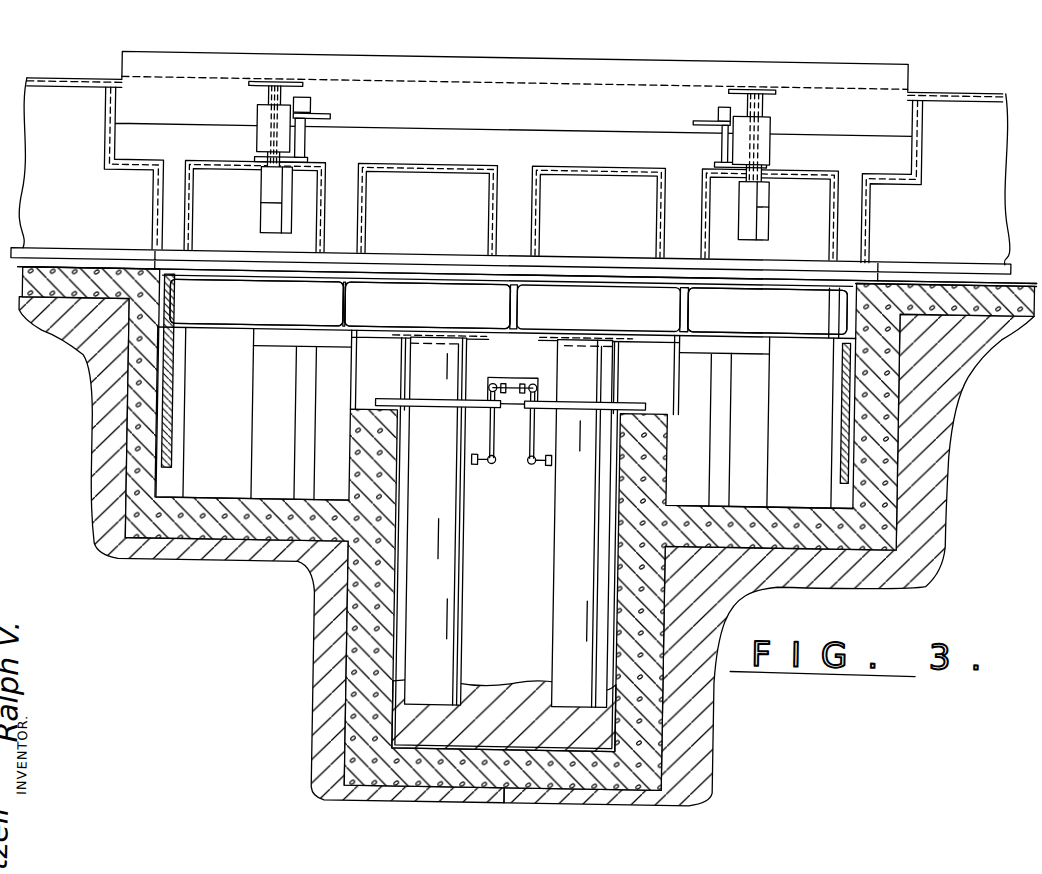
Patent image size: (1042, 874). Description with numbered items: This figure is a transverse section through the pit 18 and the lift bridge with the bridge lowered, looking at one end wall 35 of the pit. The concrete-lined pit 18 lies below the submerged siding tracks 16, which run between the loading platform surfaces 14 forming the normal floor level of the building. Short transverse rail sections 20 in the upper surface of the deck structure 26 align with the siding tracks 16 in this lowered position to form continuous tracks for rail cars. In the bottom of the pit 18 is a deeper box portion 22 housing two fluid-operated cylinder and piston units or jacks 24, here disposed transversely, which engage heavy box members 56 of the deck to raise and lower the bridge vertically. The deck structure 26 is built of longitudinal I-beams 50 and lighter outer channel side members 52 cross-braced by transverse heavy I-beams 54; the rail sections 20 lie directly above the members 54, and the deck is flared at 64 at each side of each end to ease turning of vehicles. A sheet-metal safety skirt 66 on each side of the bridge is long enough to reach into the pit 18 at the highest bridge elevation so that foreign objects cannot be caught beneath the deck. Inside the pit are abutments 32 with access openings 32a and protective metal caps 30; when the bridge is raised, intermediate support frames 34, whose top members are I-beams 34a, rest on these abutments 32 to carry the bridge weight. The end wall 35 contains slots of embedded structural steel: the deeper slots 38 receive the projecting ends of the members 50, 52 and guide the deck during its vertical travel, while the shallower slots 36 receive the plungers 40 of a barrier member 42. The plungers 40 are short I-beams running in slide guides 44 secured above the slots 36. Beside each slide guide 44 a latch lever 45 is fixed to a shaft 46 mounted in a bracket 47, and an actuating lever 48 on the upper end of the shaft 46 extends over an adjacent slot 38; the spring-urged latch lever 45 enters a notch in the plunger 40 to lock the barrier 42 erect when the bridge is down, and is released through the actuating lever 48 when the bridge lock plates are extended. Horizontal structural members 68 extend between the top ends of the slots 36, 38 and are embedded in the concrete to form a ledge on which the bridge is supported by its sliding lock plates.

The loading platform surface 14 is at (56, 86).
The siding tracks 16 is at (55, 251).
The pit 18 is at (165, 480).
The rail sections 20 is at (201, 256).
The deeper box portion 22 is at (620, 494).
The cylinder and piston units 24 is at (555, 546).
The deck structure 26 is at (581, 291).
The metal caps 30 is at (224, 312).
The abutments 32 is at (234, 414).
The access openings 32a is at (282, 471).
The intermediate support frame 34 is at (346, 362).
The top I-beam members 34a is at (330, 334).
The end walls 35 is at (424, 200).
The slots 36 is at (284, 210).
The slots 38 is at (190, 193).
The plungers 40 is at (260, 101).
The barrier member 42 is at (466, 57).
The slide guides 44 is at (252, 141).
The latch lever 45 is at (592, 144).
The shaft 46 is at (300, 141).
The bracket 47 is at (298, 101).
The actuating lever 48 is at (306, 107).
The longitudinal I-beams 50 is at (356, 299).
The outer channel side members 52 is at (178, 301).
The transverse I-beams 54 is at (436, 308).
The box members 56 is at (306, 315).
The flared deck end 64 is at (125, 253).
The safety skirt 66 is at (173, 395).
The horizontal structural members 68 is at (150, 166).